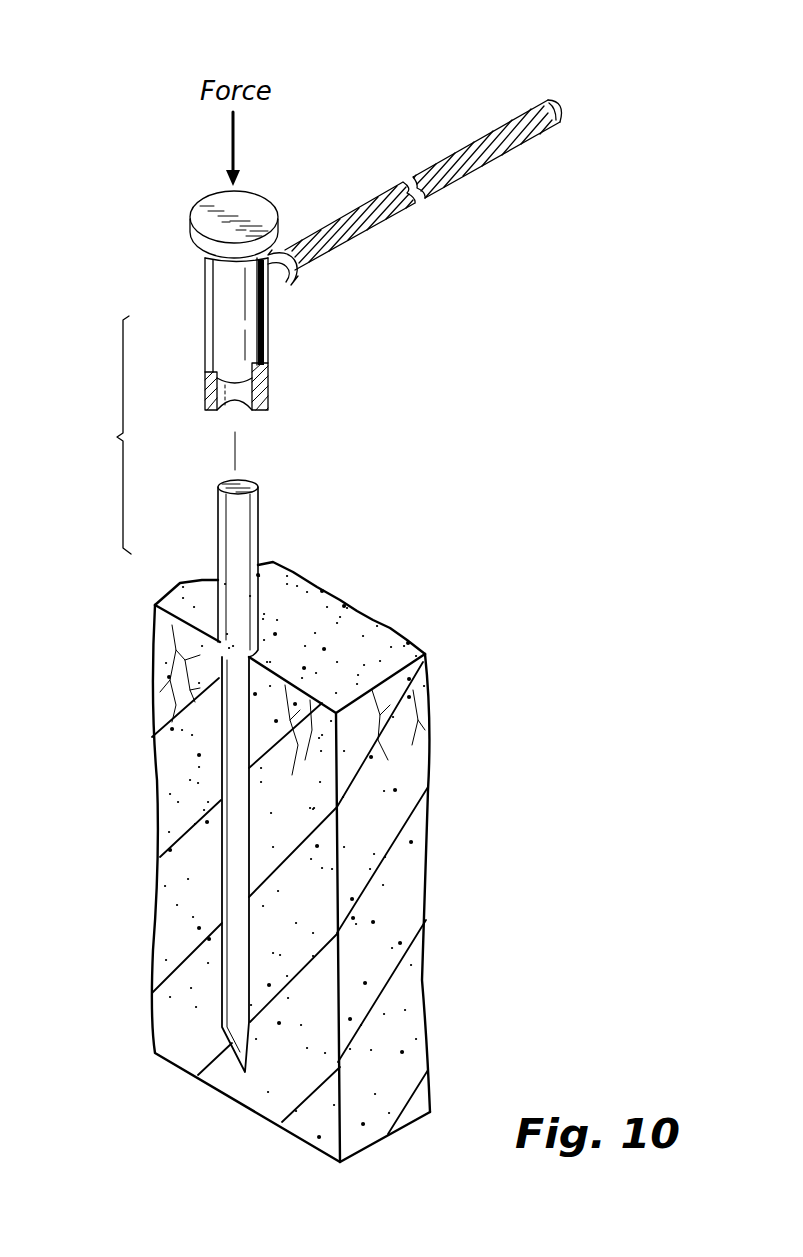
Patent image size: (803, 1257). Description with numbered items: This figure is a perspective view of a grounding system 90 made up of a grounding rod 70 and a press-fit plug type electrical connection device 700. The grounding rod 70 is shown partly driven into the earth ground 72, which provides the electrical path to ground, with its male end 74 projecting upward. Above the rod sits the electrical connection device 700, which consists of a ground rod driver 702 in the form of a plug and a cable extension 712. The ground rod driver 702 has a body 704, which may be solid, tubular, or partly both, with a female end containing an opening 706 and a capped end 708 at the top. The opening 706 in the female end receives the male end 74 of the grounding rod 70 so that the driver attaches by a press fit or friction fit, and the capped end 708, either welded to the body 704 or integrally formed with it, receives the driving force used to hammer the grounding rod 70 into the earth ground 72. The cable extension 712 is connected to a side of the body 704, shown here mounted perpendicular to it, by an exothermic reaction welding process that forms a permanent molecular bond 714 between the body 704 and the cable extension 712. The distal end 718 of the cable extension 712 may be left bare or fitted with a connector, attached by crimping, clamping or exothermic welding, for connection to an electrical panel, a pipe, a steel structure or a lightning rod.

The electrical connection device 700 is at (332, 146).
The capped end 708 is at (205, 196).
The body 704 is at (205, 292).
The ground rod driver 702 is at (200, 325).
The opening 706 is at (251, 427).
The permanent molecular bond 714 is at (277, 292).
The cable extension 712 is at (387, 245).
The distal end 718 is at (539, 132).
The grounding system 90 is at (108, 432).
The male end 74 is at (218, 506).
The grounding rod 70 is at (222, 572).
The ground 72 is at (360, 648).